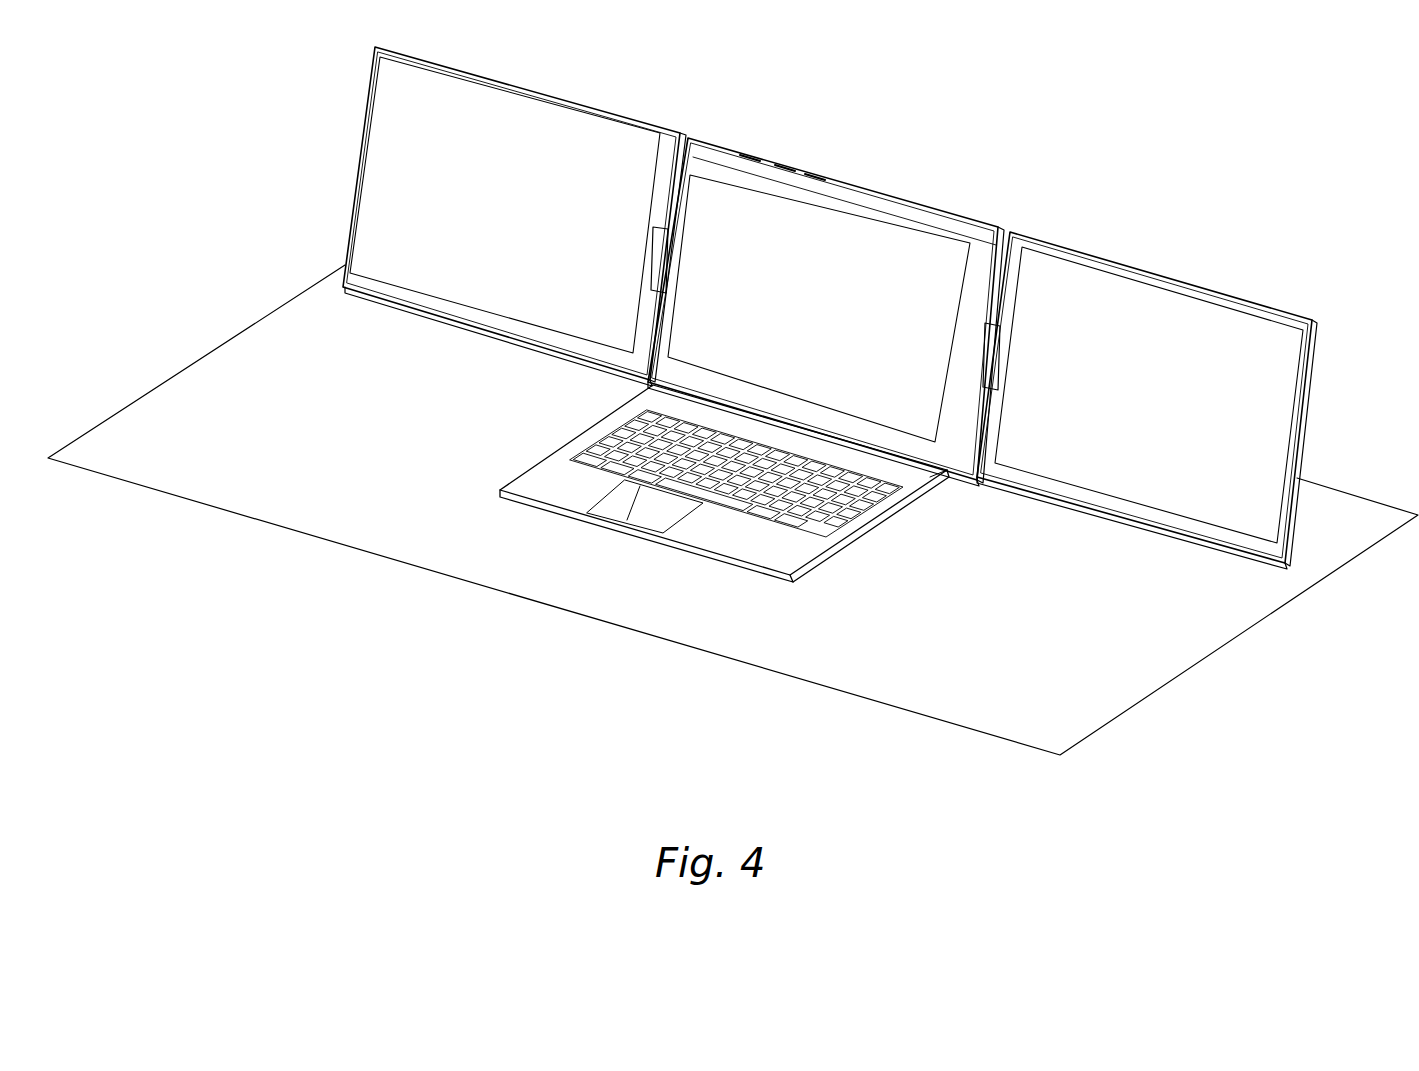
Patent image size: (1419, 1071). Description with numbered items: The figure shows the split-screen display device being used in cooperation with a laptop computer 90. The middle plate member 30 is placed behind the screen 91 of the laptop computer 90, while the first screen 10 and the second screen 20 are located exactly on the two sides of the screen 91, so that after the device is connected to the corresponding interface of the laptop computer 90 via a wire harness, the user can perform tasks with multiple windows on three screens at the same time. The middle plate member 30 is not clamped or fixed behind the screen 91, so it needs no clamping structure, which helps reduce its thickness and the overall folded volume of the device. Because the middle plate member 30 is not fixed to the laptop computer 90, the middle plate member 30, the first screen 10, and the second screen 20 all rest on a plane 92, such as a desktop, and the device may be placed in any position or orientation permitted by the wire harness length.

The first screen 10 is at (1120, 262).
The second screen 20 is at (533, 92).
The middle plate member 30 is at (877, 188).
The laptop computer 90 is at (707, 483).
The screen 91 is at (857, 393).
The plane 92 is at (700, 608).